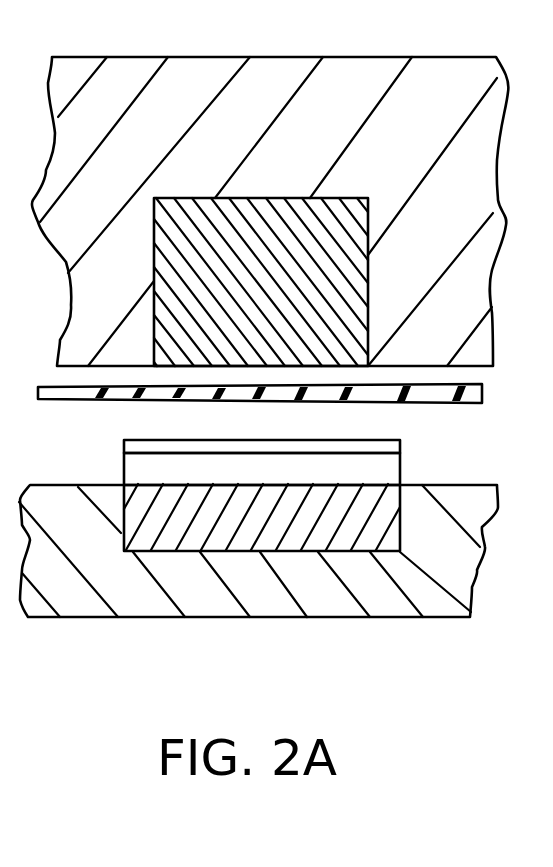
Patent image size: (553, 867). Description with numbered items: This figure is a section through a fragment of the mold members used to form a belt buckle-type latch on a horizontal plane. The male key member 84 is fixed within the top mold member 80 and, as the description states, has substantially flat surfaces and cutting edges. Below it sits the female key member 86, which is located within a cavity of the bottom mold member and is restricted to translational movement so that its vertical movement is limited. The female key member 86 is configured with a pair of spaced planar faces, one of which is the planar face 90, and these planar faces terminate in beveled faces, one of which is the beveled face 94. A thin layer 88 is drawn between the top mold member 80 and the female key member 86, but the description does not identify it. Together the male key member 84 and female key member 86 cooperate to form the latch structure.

The top mold member 80 is at (158, 57).
The male key member 84 is at (324, 367).
The thin film layer 88 is at (484, 391).
The beveled face 94 is at (140, 445).
The planar face 90 is at (138, 477).
The female key member 86 is at (393, 507).